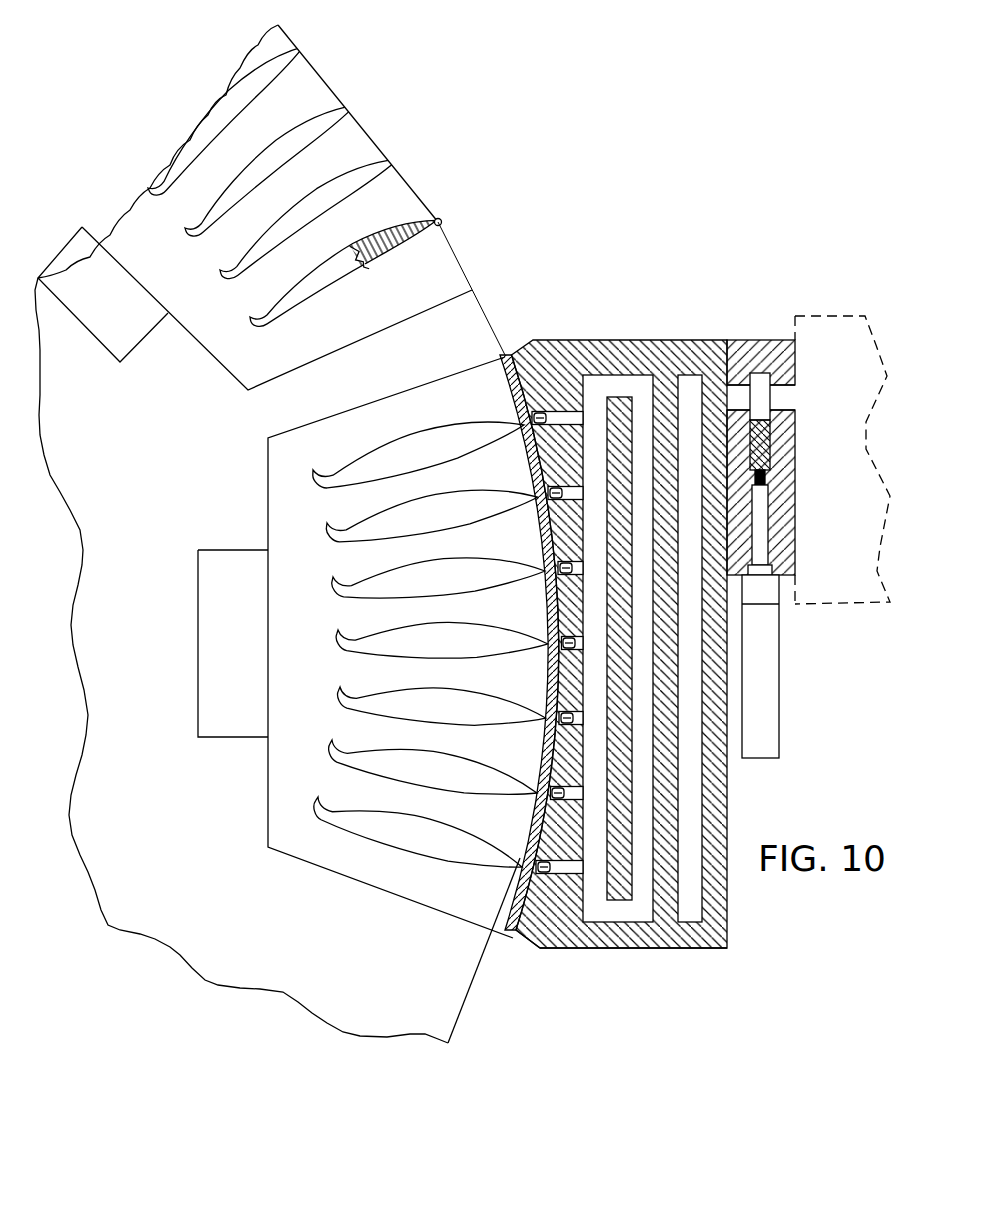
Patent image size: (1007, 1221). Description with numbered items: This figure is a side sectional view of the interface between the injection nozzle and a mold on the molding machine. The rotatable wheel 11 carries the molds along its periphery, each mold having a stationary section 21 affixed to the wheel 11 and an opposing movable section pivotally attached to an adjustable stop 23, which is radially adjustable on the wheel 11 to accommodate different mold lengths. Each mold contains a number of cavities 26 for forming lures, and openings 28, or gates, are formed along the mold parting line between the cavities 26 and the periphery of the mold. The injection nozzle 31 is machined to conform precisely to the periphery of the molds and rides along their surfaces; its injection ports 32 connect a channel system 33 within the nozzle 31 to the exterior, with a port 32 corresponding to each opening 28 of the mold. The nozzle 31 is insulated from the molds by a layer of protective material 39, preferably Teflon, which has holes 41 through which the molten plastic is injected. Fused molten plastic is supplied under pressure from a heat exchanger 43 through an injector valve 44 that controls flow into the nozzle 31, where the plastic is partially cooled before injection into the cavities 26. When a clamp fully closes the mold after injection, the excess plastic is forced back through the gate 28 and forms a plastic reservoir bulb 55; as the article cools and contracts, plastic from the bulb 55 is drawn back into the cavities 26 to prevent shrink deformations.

The rotatable wheel 11 is at (472, 308).
The stationary section 21 is at (307, 92).
The adjustable stop 23 is at (123, 327).
The cavities 26 is at (365, 183).
The openings 28 is at (510, 427).
The injection nozzle 31 is at (578, 335).
The injection ports 32 is at (563, 920).
The channel system 33 is at (690, 390).
The protective material 39 is at (513, 917).
The holes 41 is at (520, 863).
The heat exchanger 43 is at (856, 342).
The injector valve 44 is at (767, 431).
The plastic reservoir bulb 55 is at (442, 221).